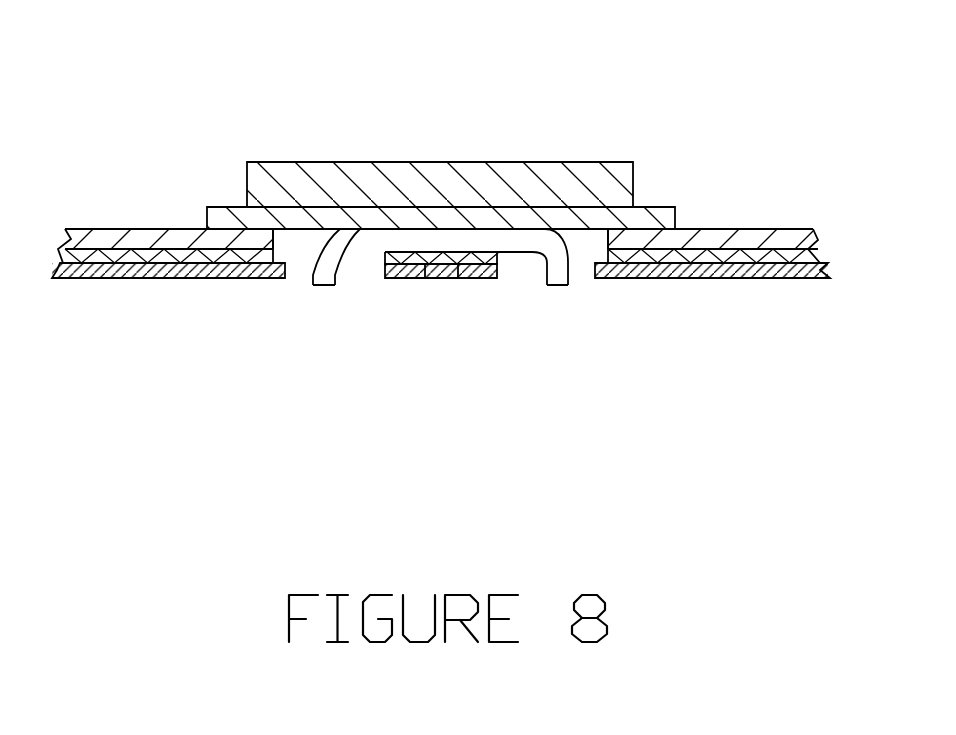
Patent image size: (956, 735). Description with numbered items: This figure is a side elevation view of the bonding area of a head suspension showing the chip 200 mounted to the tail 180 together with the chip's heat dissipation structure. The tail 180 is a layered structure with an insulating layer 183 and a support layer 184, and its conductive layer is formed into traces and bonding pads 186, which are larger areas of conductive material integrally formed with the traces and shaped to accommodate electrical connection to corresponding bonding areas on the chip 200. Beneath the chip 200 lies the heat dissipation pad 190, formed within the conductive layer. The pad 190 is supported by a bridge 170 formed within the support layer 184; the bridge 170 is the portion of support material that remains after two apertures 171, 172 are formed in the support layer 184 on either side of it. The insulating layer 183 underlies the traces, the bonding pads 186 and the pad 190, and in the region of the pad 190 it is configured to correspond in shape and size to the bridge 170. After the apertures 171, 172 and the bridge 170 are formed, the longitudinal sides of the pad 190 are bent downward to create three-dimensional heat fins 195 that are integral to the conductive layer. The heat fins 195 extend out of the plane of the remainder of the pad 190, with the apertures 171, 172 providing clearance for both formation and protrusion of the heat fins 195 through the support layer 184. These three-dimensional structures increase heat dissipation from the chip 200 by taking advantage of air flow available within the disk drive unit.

The tail 180 is at (167, 182).
The chip 200 is at (475, 162).
The pad 190 is at (432, 237).
The bonding pads 186 is at (717, 229).
The insulating layer 183 is at (770, 258).
The support layer 184 is at (720, 278).
The bridge 170 is at (405, 280).
The aperture 172 is at (298, 282).
The aperture 171 is at (583, 273).
The heat fins 195 is at (321, 287).